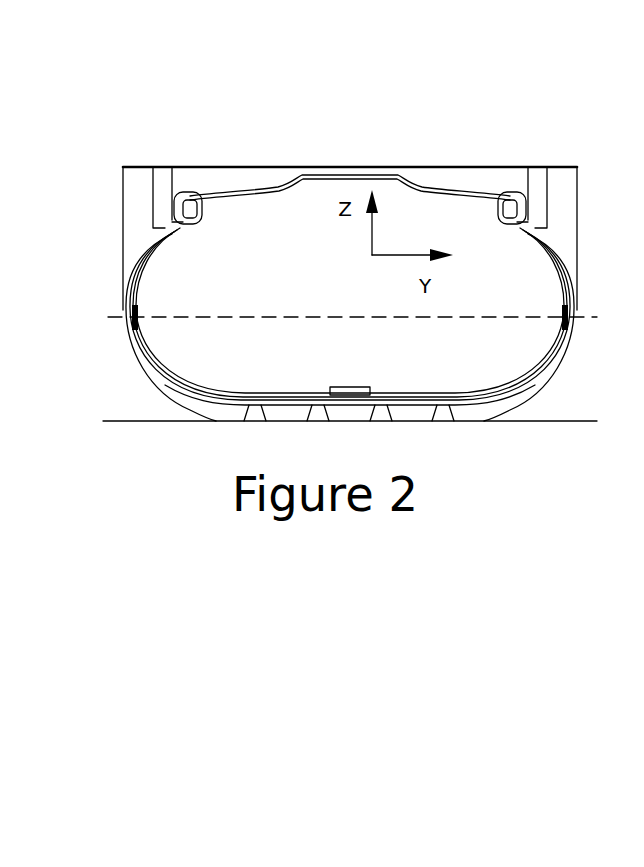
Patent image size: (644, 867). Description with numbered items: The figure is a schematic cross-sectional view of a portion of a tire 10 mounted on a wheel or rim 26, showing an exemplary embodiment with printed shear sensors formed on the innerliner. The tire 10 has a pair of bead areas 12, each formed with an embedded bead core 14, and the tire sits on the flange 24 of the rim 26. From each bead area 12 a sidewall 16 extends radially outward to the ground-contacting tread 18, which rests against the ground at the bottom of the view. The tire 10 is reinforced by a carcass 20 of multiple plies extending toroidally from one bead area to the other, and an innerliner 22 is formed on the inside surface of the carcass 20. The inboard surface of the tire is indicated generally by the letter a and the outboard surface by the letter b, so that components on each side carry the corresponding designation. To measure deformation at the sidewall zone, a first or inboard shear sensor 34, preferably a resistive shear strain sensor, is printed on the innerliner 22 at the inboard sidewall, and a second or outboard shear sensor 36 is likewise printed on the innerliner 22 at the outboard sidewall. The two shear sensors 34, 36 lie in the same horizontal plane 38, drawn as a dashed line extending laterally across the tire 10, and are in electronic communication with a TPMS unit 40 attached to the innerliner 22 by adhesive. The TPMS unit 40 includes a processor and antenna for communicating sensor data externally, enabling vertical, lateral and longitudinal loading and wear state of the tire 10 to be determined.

The tire 10 is at (416, 122).
The bead area 12 is at (182, 220).
The bead core 14 is at (208, 192).
The sidewall 16 is at (132, 357).
The tread 18 is at (347, 417).
The carcass 20 is at (530, 362).
The innerliner 22 is at (183, 387).
The flange 24 is at (188, 205).
The rim 26 is at (346, 170).
The inboard shear sensor 34 is at (138, 308).
The outboard shear sensor 36 is at (557, 307).
The horizontal plane 38 is at (228, 317).
The TPMS unit 40 is at (342, 386).
The inboard surface a is at (122, 337).
The outboard surface b is at (573, 329).